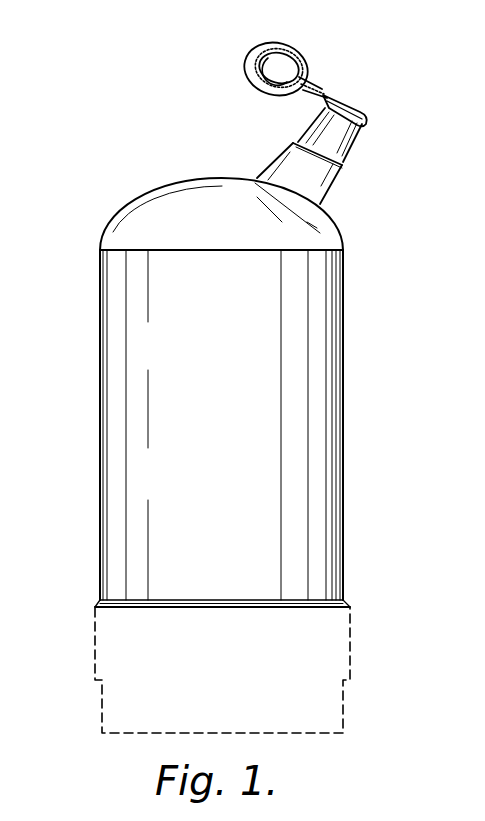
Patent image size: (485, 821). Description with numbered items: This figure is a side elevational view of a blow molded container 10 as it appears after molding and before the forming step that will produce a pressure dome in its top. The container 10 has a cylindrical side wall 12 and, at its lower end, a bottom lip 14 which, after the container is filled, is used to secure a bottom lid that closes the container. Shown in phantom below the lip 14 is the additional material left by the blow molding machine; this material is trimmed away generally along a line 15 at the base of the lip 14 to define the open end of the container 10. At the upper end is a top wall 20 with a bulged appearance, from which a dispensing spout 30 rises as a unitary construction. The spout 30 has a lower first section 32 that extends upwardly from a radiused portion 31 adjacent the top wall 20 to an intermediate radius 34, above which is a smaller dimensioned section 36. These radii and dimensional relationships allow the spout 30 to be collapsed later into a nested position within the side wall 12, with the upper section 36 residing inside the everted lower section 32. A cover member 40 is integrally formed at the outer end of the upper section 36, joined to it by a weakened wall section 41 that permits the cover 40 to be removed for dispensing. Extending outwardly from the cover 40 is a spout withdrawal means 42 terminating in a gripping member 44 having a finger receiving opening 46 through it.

The container 10 is at (86, 456).
The cylindrical side wall 12 is at (327, 388).
The bottom lip 14 is at (349, 602).
The trim line 15 is at (210, 607).
The top wall 20 is at (165, 175).
The dispensing spout 30 is at (297, 110).
The radiused portion 31 is at (320, 205).
The lower first section 32 is at (307, 177).
The intermediate radius 34 is at (338, 168).
The smaller dimensioned section 36 is at (333, 132).
The cover member 40 is at (360, 93).
The weakened wall section 41 is at (367, 112).
The spout withdrawal means 42 is at (317, 76).
The gripping member 44 is at (277, 43).
The finger receiving opening 46 is at (257, 86).